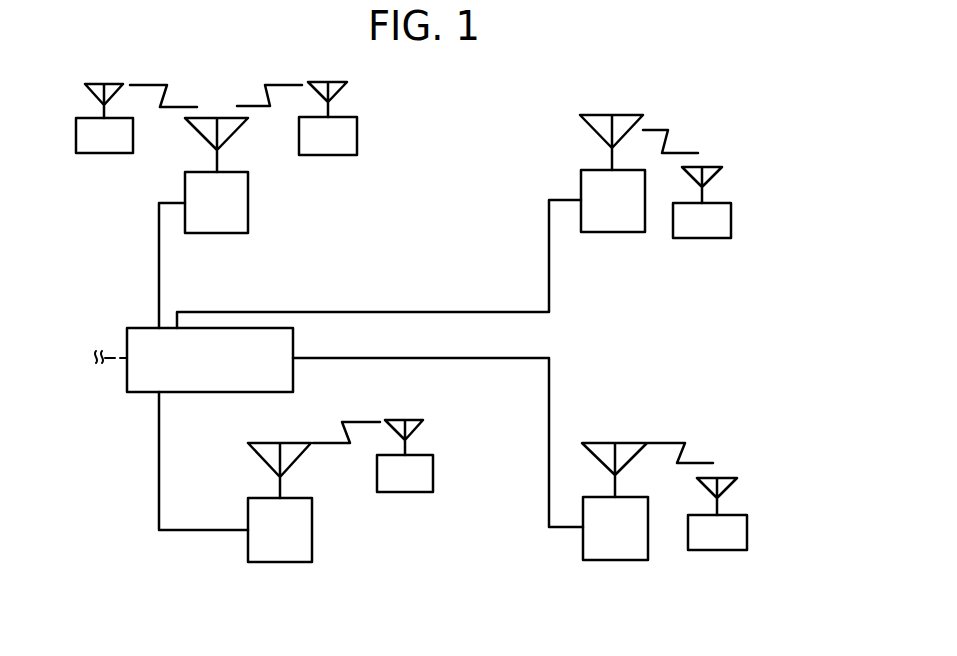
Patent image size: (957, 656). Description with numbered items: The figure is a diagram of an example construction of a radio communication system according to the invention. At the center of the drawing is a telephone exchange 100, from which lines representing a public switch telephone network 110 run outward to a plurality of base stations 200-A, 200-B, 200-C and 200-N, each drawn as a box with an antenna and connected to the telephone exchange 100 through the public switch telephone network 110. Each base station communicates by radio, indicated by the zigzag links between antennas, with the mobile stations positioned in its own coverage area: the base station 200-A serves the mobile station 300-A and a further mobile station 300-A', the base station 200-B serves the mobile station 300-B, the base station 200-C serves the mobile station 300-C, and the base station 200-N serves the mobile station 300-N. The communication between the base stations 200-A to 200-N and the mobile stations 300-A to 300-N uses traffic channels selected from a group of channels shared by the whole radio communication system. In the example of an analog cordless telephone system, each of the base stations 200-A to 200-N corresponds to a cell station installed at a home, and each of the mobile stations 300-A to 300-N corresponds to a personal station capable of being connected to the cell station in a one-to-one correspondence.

The telephone exchange 100 is at (199, 376).
The public switch telephone network 110 is at (159, 282).
The base station 200-A is at (248, 203).
The base station 200-B is at (615, 232).
The base station 200-C is at (312, 530).
The base station 200-N is at (605, 560).
The mobile station 300-A is at (388, 118).
The mobile station 300-A' is at (86, 156).
The mobile station 300-B is at (731, 220).
The mobile station 300-C is at (433, 472).
The mobile station 300-N is at (747, 532).